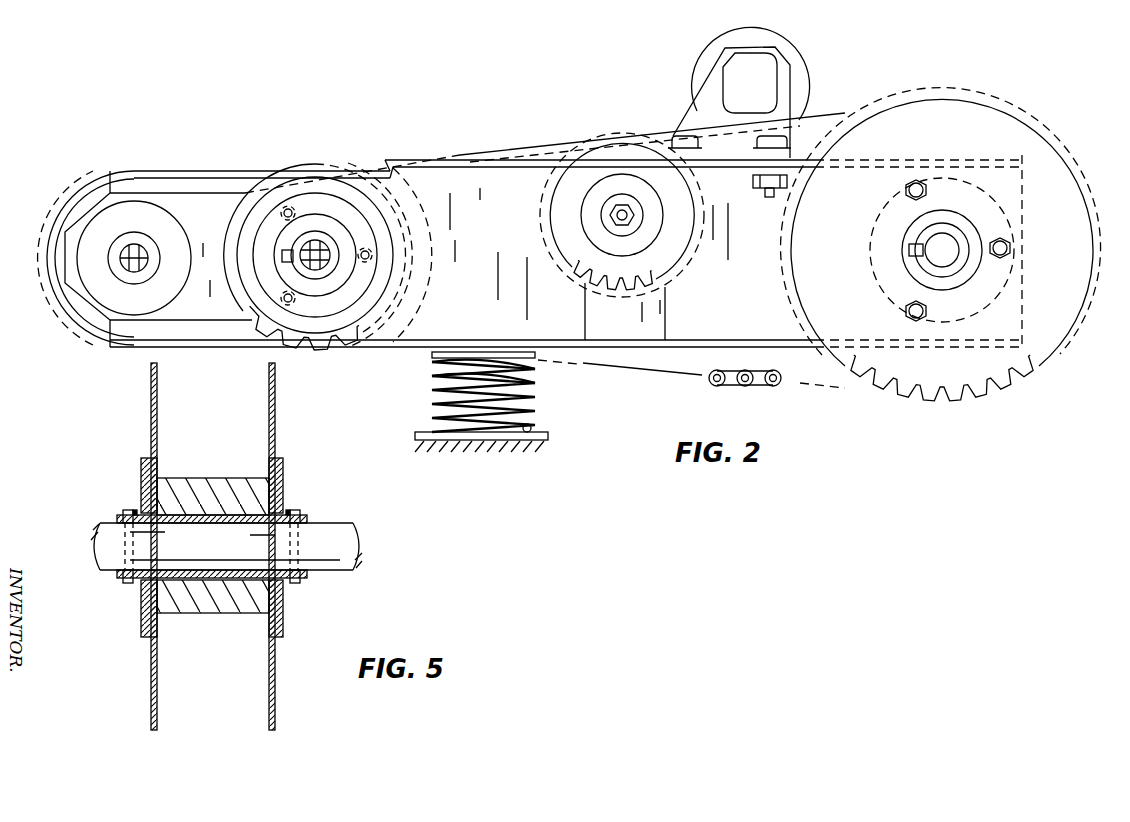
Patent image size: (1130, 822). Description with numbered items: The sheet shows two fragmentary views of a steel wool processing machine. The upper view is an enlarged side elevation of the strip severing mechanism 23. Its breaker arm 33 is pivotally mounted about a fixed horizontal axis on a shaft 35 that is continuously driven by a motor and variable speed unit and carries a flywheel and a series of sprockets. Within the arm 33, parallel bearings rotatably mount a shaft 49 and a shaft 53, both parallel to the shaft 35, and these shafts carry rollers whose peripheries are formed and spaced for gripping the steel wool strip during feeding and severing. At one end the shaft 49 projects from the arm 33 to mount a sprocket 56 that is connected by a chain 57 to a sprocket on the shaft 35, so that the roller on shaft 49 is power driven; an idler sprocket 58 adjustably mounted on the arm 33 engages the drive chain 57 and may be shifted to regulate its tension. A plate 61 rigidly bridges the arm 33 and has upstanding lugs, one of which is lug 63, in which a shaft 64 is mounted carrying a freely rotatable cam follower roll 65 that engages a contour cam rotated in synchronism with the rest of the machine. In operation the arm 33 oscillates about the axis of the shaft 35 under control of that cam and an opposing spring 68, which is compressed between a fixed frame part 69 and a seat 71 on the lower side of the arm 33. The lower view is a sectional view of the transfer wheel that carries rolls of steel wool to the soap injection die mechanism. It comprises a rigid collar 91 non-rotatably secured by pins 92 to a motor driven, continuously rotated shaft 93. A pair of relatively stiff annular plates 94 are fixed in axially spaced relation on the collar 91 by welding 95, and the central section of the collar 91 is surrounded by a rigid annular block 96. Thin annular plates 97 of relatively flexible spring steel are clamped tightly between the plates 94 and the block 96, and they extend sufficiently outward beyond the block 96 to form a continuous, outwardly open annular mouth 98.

In FIG. 2, the severing mechanism 23 is at (597, 119).
In FIG. 2, the breaker arm 33 is at (713, 339).
In FIG. 2, the shaft 35 is at (943, 262).
In FIG. 2, the shaft 49 is at (323, 244).
In FIG. 2, the shaft 53 is at (125, 238).
In FIG. 2, the sprocket 56 is at (286, 330).
In FIG. 2, the chain 57 is at (840, 113).
In FIG. 2, the idler sprocket 58 is at (676, 260).
In FIG. 2, the plate 61 is at (746, 152).
In FIG. 2, the lug 63 is at (699, 112).
In FIG. 2, the shaft 64 is at (762, 70).
In FIG. 2, the cam follower roll 65 is at (762, 38).
In FIG. 2, the spring 68 is at (532, 396).
In FIG. 2, the fixed frame part 69 is at (548, 437).
In FIG. 2, the seat 71 is at (432, 353).
In FIG. 5, the collar 91 is at (217, 523).
In FIG. 5, the pins 92 is at (132, 515).
In FIG. 5, the shaft 93 is at (350, 534).
In FIG. 5, the annular plates 94 is at (143, 477).
In FIG. 5, the welding 95 is at (137, 512).
In FIG. 5, the annular block 96 is at (218, 492).
In FIG. 5, the annular plates 97 is at (150, 410).
In FIG. 5, the annular mouth 98 is at (228, 441).